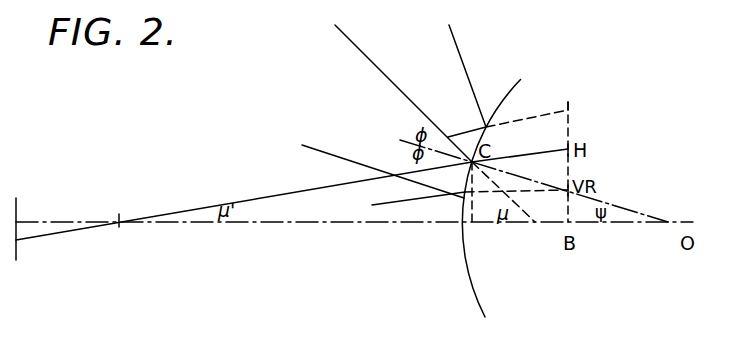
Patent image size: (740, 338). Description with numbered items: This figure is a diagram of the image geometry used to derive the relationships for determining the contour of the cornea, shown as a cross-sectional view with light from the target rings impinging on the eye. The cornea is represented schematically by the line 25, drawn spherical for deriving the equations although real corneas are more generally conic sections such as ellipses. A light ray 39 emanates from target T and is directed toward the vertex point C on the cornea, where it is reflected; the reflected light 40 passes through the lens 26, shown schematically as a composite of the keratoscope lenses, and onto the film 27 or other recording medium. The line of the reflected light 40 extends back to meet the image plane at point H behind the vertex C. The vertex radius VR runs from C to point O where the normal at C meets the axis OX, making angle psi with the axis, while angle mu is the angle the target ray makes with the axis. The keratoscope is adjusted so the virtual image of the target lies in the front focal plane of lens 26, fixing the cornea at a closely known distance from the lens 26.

The line representing the cornea 25 is at (517, 88).
The lens 26 is at (123, 226).
The film 27 is at (17, 243).
The light ray 39 is at (388, 74).
The reflected light 40 is at (272, 197).